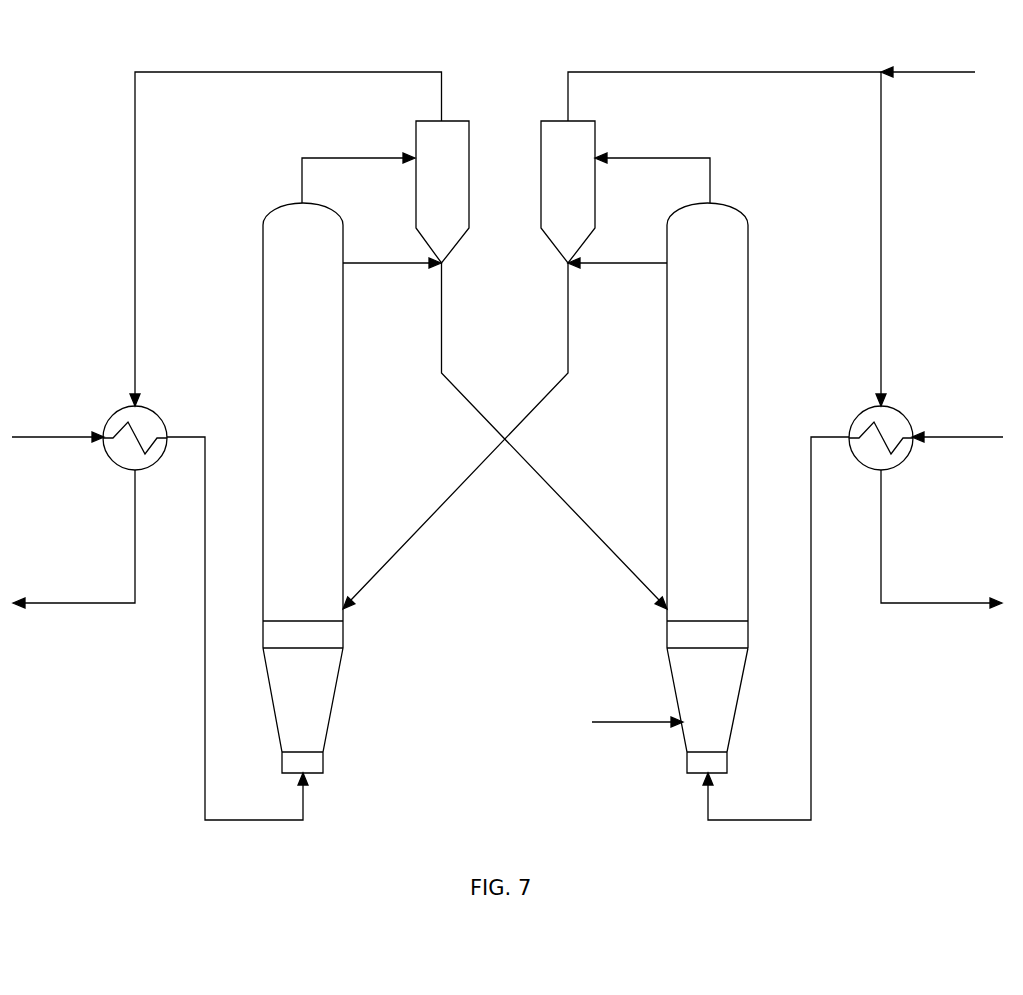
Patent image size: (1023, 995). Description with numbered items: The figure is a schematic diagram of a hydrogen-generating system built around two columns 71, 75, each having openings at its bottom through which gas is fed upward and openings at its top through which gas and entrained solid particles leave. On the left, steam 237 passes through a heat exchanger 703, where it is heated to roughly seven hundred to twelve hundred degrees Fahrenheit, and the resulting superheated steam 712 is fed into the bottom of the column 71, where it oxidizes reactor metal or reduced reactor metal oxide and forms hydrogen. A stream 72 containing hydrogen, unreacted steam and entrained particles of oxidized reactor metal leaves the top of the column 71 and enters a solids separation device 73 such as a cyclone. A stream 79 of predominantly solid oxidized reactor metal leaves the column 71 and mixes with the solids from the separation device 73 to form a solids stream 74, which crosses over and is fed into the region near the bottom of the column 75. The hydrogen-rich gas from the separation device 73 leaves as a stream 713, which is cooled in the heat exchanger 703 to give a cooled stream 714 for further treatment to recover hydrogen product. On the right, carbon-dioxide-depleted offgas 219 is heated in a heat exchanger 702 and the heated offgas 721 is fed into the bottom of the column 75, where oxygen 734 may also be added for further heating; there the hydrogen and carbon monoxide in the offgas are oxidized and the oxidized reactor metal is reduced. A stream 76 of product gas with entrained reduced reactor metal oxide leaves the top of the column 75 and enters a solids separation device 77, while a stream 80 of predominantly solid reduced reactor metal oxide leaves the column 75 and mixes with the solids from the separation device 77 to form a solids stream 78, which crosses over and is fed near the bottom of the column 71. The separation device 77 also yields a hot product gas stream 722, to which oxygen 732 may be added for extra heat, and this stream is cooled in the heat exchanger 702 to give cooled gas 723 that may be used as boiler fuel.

The column 71 is at (303, 488).
The column 75 is at (707, 488).
The solids separation device 73 is at (442, 192).
The solids separation device 77 is at (568, 192).
The heat exchanger 703 is at (104, 398).
The heat exchanger 702 is at (916, 397).
The stream 713 is at (286, 225).
The stream 722 is at (727, 225).
The oxygen 732 is at (928, 60).
The stream 72 is at (358, 165).
The stream 76 is at (652, 165).
The stream 79 is at (392, 248).
The stream 80 is at (617, 248).
The solids stream 74 is at (555, 436).
The stream 78 is at (455, 436).
The steam 237 is at (58, 424).
The CO2-depleted offgas 219 is at (957, 424).
The cooled stream 714 is at (74, 539).
The cooled gas 723 is at (941, 539).
The superheated steam 712 is at (237, 628).
The heated offgas 721 is at (781, 628).
The oxygen 734 is at (637, 708).